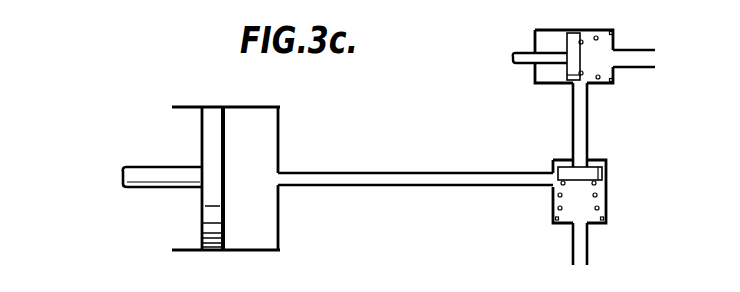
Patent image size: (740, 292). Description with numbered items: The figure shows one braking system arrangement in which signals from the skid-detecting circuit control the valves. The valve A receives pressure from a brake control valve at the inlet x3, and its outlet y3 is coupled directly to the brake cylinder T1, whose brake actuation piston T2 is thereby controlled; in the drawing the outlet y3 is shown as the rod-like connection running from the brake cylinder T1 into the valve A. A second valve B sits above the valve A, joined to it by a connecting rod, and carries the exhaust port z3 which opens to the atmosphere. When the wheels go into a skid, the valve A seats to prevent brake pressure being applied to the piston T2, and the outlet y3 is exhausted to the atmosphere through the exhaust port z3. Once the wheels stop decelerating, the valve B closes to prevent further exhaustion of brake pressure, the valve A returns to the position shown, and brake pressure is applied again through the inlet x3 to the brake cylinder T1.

The brake cylinder T1 is at (279, 138).
The brake actuation piston T2 is at (213, 137).
The valve A is at (607, 200).
The valve B is at (598, 29).
The pressure inlet x3 is at (578, 245).
The outlet y3 is at (552, 178).
The exhaust port z3 is at (640, 60).